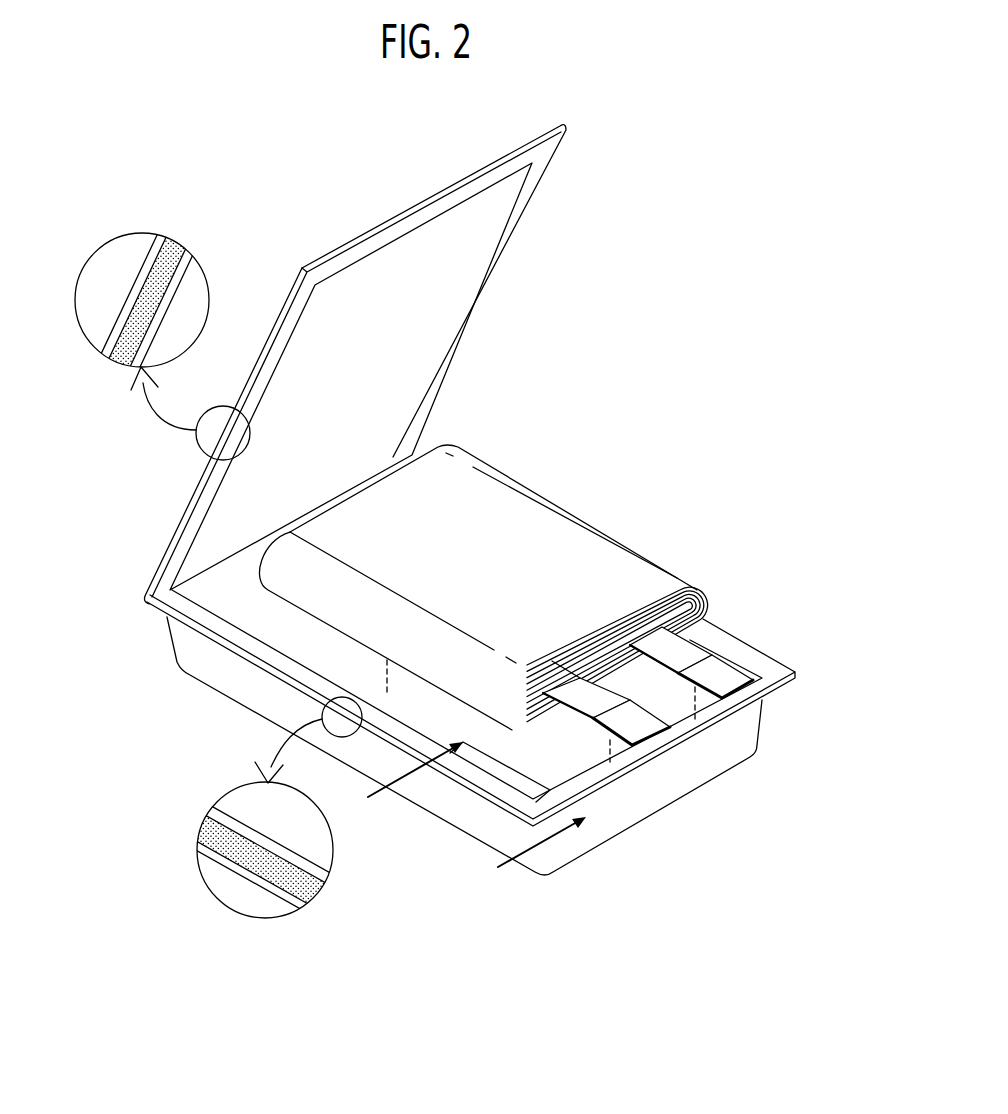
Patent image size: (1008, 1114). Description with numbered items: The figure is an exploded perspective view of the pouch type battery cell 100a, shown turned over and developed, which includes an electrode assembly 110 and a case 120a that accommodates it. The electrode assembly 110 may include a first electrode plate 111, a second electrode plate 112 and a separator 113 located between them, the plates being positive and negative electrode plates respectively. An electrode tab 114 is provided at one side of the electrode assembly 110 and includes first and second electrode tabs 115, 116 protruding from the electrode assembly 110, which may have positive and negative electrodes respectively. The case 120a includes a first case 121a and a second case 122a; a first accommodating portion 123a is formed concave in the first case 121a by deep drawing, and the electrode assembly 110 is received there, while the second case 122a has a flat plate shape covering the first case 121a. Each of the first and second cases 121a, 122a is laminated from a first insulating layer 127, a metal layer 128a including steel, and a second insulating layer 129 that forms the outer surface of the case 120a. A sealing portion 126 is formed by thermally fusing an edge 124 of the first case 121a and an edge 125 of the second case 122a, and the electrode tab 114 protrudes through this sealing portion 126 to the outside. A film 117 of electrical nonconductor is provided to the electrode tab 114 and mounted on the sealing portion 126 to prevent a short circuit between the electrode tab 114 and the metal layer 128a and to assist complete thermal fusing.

The pouch type battery cell 100a is at (90, 85).
The electrode assembly 110 is at (588, 492).
The first electrode plate 111 is at (697, 588).
The second electrode plate 112 is at (692, 612).
The separator 113 is at (698, 603).
The electrode tab 114 is at (840, 756).
The first electrode tab 115 is at (736, 683).
The second electrode tab 116 is at (649, 730).
The film 117 is at (567, 723).
The case 120a is at (689, 286).
The first case 121a is at (780, 652).
The second case 122a is at (521, 271).
The first accommodating portion 123a is at (504, 752).
The edge of the first case 124 is at (254, 652).
The edge of the second case 125 is at (148, 594).
The sealing portion 126 is at (70, 574).
The first insulating layer 127 is at (196, 262).
The metal layer 128a is at (192, 248).
The second insulating layer 129 is at (158, 240).